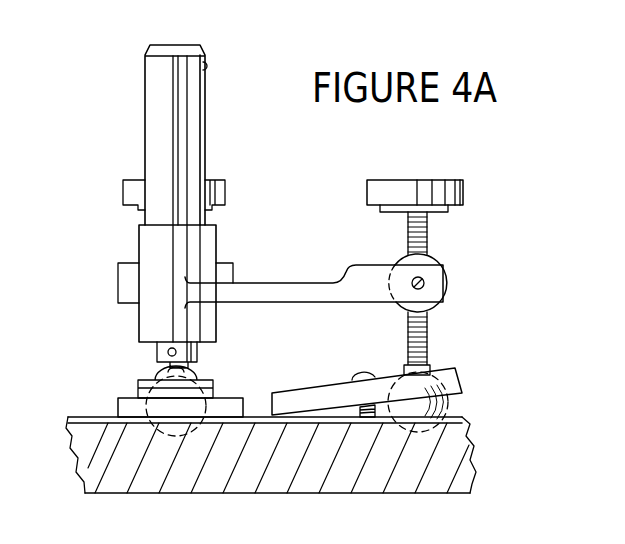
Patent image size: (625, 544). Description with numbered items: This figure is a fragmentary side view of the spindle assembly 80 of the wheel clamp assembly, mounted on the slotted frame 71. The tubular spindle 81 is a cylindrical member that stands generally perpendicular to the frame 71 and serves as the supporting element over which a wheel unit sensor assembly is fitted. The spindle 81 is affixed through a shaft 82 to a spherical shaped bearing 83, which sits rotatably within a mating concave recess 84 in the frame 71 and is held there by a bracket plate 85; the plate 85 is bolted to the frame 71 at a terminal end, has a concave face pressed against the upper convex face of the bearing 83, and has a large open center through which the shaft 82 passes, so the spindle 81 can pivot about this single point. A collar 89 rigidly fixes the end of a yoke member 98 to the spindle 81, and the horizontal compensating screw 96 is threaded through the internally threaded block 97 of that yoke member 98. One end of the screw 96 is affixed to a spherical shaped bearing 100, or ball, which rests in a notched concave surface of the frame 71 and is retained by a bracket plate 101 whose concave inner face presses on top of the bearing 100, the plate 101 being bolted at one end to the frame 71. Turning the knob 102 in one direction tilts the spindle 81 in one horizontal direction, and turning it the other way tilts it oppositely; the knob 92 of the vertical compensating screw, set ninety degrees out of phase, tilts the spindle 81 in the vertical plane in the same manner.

The slotted frame 71 is at (78, 417).
The spindle assembly 80 is at (147, 117).
The tubular spindle 81 is at (206, 105).
The shaft 82 is at (193, 370).
The spherical shaped bearing 83 is at (150, 395).
The concave recess 84 is at (182, 415).
The bracket plate 85 is at (226, 396).
The collar 89 is at (216, 248).
The knob 92 is at (225, 197).
The horizontal compensating screw 96 is at (428, 228).
The block 97 is at (438, 303).
The yoke member 98 is at (308, 303).
The spherical shaped bearing 100 is at (453, 401).
The bracket plate 101 is at (463, 378).
The knob 102 is at (452, 180).